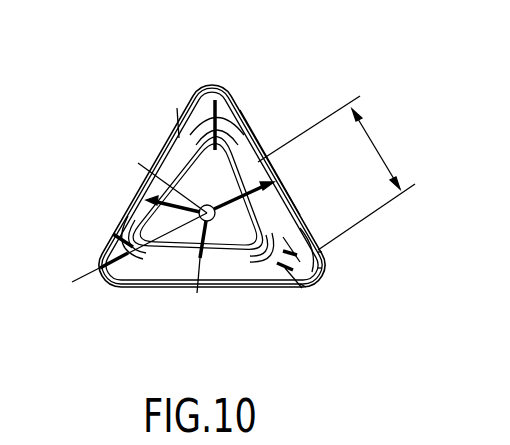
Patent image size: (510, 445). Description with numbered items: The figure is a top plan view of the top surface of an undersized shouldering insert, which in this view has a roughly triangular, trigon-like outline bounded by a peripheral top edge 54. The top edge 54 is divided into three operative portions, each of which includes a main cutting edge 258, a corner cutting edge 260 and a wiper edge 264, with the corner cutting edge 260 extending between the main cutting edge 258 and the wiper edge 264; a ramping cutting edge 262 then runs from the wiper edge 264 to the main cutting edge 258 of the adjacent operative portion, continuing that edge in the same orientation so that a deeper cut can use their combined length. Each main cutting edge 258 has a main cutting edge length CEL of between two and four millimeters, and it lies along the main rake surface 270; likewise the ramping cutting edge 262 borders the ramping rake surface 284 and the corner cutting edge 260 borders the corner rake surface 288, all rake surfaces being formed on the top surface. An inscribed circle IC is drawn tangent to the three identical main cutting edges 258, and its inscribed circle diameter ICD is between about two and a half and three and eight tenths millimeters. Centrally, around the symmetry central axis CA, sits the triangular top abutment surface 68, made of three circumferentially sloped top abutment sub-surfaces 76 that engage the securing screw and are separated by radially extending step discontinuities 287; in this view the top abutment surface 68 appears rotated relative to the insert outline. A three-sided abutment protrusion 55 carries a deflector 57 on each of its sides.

The top edge 54 is at (140, 165).
The abutment protrusion 55 is at (147, 192).
The top abutment surface 68 is at (100, 180).
The top abutment sub-surfaces 76 is at (127, 208).
The deflector 57 is at (198, 293).
The step discontinuity 287 is at (215, 100).
The ramping cutting edge 262 is at (247, 122).
The ramping rake surface 284 is at (257, 133).
The main rake surface 270 is at (303, 203).
The main cutting edge 258 is at (300, 223).
The corner rake surface 288 is at (322, 250).
The corner cutting edge 260 is at (322, 268).
The wiper edge 264 is at (303, 287).
The inscribed circle IC is at (177, 108).
The central axis CA is at (190, 140).
The inscribed circle diameter ICD is at (117, 257).
The main cutting edge length CEL is at (342, 173).